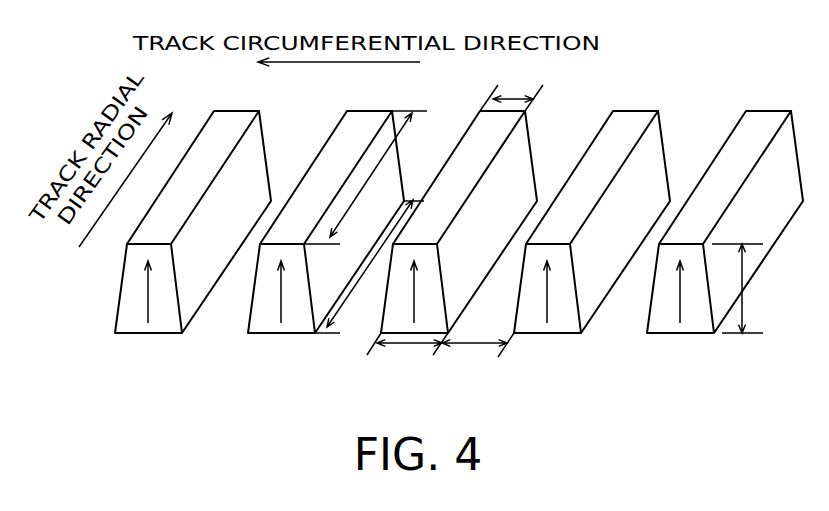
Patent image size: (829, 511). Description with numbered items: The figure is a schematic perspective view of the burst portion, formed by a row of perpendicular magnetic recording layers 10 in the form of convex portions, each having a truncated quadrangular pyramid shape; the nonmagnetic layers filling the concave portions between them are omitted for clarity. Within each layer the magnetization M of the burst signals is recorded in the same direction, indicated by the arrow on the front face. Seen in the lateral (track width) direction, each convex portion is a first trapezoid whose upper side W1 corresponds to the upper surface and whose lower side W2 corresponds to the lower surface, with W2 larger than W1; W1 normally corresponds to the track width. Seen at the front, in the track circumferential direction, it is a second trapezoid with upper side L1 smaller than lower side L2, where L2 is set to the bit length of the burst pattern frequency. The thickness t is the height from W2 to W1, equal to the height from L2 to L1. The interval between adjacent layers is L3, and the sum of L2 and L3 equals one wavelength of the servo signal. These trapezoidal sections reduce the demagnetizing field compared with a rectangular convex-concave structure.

The perpendicular magnetic recording layer 10 is at (752, 132).
The magnetization M is at (424, 292).
The upper side in the track width direction W1 is at (365, 177).
The lower side in the track width direction W2 is at (369, 266).
The upper side in the track circumferential direction L1 is at (511, 92).
The lower side in the track circumferential direction L2 is at (407, 351).
The interval between adjacent perpendicular magnetic recording layers L3 is at (478, 351).
The thickness of the perpendicular magnetic recording layer t is at (737, 288).